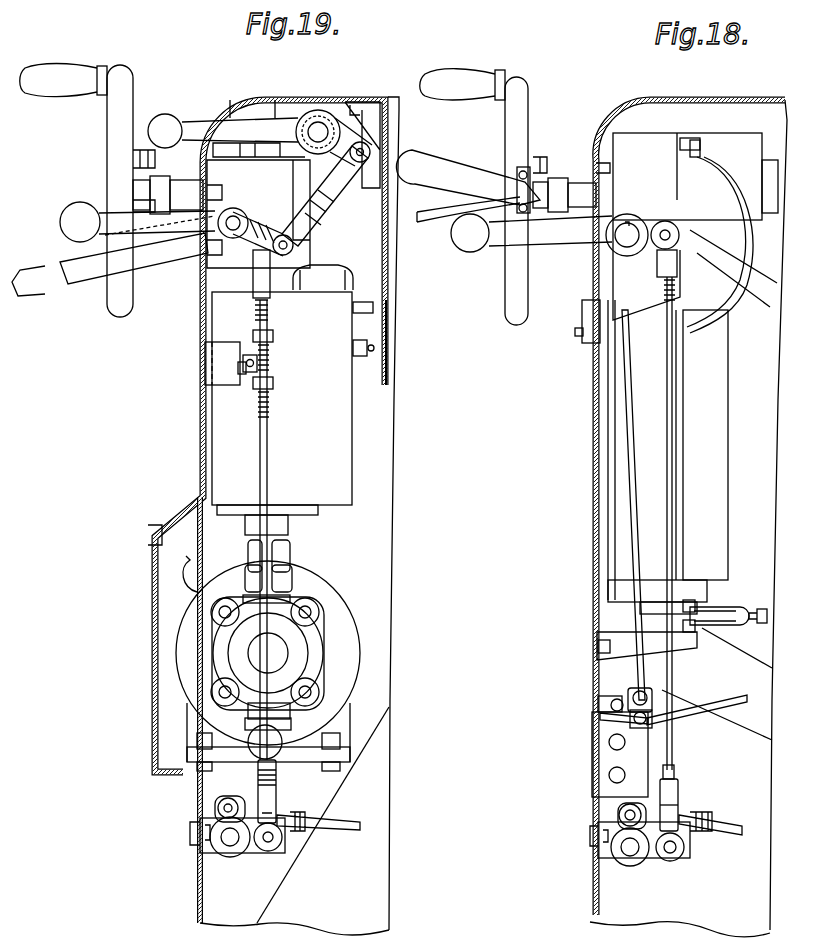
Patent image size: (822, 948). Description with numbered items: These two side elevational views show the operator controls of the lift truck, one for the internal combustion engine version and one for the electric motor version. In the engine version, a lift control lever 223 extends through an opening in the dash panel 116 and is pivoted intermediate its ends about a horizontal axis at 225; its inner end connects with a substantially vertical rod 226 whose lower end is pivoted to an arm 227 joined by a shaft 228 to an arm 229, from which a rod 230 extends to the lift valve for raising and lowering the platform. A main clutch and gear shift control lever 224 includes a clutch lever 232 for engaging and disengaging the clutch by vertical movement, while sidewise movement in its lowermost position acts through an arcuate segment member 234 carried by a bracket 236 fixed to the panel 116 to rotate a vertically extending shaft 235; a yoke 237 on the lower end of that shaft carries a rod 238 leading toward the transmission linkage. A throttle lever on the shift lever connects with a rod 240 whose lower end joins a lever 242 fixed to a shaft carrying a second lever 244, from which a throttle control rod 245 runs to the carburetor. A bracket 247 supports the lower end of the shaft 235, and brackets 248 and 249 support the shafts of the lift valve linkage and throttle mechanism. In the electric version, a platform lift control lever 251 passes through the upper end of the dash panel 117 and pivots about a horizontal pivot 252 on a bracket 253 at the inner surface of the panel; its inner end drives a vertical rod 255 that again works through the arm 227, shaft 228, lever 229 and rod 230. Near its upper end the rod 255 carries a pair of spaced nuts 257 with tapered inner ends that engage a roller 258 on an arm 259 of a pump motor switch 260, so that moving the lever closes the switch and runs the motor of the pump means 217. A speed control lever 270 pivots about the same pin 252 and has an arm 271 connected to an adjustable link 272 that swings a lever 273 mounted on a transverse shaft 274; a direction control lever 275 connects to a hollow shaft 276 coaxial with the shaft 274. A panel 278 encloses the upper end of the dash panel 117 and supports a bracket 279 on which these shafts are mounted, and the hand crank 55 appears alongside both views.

In FIG. 19, the hand crank 55 is at (121, 74).
In FIG. 18, the hand crank 55 is at (520, 82).
In FIG. 18, the dash panel 116 is at (703, 100).
In FIG. 19, the dash panel 117 is at (270, 97).
In FIG. 19, the pump means 217 is at (168, 664).
In FIG. 18, the lift control lever 223 is at (552, 238).
In FIG. 18, the main clutch and gear shift control lever 224 is at (460, 162).
In FIG. 18, the horizontal pivot 225 is at (628, 230).
In FIG. 18, the rod 226 is at (748, 446).
In FIG. 19, the arm 227 is at (258, 848).
In FIG. 18, the arm 227 is at (652, 860).
In FIG. 19, the shaft 228 is at (228, 840).
In FIG. 18, the shaft 228 is at (630, 852).
In FIG. 19, the arm 229 is at (240, 793).
In FIG. 18, the arm 229 is at (625, 820).
In FIG. 19, the rod 230 is at (333, 825).
In FIG. 18, the rod 230 is at (720, 827).
In FIG. 18, the clutch lever 232 is at (752, 288).
In FIG. 18, the arcuate segment member 234 is at (730, 187).
In FIG. 18, the vertically extending shaft 235 is at (683, 387).
In FIG. 18, the bracket 236 is at (643, 178).
In FIG. 18, the yoke 237 is at (720, 602).
In FIG. 18, the rod 238 is at (764, 610).
In FIG. 18, the rod 240 is at (633, 478).
In FIG. 18, the lever 242 is at (630, 695).
In FIG. 18, the second lever 244 is at (642, 715).
In FIG. 18, the throttle control rod 245 is at (722, 700).
In FIG. 18, the bracket 247 is at (607, 626).
In FIG. 19, the bracket 248 is at (202, 850).
In FIG. 18, the bracket 248 is at (597, 850).
In FIG. 18, the bracket 249 is at (602, 752).
In FIG. 19, the platform lift control lever 251 is at (60, 222).
In FIG. 19, the horizontal pivot 252 is at (246, 220).
In FIG. 19, the bracket 253 is at (250, 212).
In FIG. 19, the rod 255 is at (263, 428).
In FIG. 19, the nuts 257 is at (270, 380).
In FIG. 19, the roller 258 is at (250, 354).
In FIG. 19, the arm 259 is at (244, 375).
In FIG. 19, the pump motor switch 260 is at (222, 360).
In FIG. 19, the speed control lever 270 is at (86, 272).
In FIG. 19, the arm 271 is at (258, 248).
In FIG. 19, the adjustable link 272 is at (322, 213).
In FIG. 19, the lever 273 is at (381, 97).
In FIG. 19, the shaft 274 is at (320, 130).
In FIG. 19, the direction control lever 275 is at (172, 118).
In FIG. 19, the hollow shaft 276 is at (312, 112).
In FIG. 19, the panel 278 is at (386, 321).
In FIG. 19, the bracket 279 is at (360, 142).